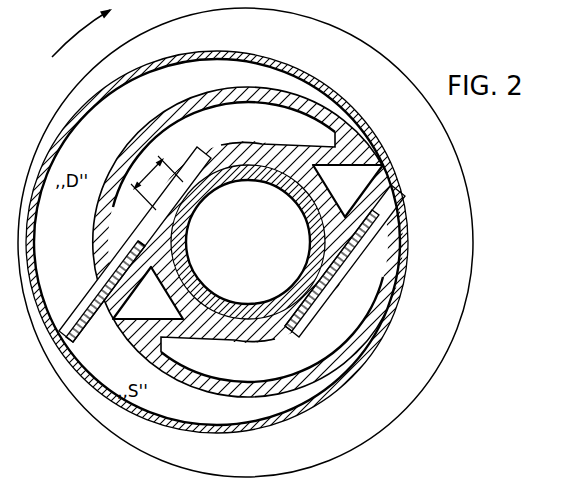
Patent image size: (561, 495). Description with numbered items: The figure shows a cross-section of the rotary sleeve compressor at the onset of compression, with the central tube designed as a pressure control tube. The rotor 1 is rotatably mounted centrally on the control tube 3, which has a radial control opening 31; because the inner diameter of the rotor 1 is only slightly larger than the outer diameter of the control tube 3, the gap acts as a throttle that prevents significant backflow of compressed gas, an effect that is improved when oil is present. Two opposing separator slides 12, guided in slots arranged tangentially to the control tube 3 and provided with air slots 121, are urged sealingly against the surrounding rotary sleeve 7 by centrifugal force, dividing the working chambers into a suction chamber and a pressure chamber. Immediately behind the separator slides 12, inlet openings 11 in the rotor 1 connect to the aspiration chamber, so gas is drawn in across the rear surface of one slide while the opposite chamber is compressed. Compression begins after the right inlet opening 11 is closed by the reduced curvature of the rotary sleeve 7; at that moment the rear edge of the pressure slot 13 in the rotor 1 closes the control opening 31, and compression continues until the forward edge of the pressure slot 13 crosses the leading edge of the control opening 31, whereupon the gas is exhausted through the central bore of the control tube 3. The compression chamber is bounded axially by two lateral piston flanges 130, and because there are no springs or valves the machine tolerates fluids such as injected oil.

The lateral piston flange 130 is at (353, 47).
The rotary sleeve 7 is at (205, 52).
The rotor 1 is at (133, 140).
The inlet opening 11 is at (367, 178).
The separator slide 12 is at (90, 303).
The air slot 121 is at (98, 276).
The pressure slot 13 is at (148, 166).
The control tube 3 is at (210, 180).
The control opening 31 is at (296, 193).